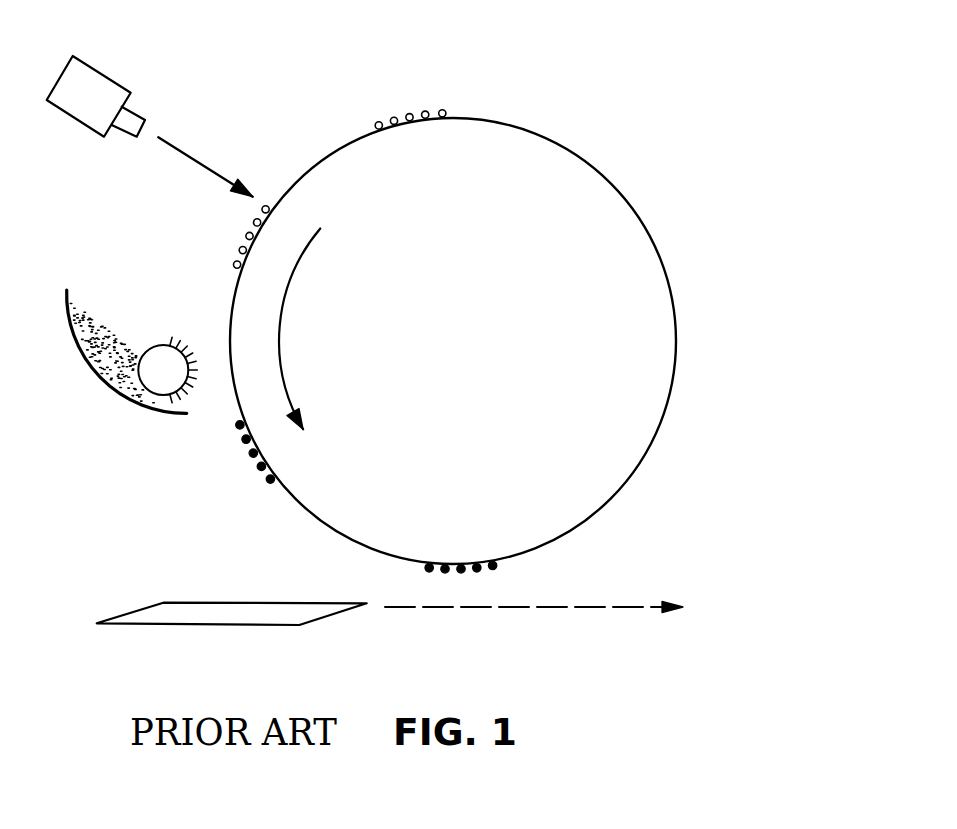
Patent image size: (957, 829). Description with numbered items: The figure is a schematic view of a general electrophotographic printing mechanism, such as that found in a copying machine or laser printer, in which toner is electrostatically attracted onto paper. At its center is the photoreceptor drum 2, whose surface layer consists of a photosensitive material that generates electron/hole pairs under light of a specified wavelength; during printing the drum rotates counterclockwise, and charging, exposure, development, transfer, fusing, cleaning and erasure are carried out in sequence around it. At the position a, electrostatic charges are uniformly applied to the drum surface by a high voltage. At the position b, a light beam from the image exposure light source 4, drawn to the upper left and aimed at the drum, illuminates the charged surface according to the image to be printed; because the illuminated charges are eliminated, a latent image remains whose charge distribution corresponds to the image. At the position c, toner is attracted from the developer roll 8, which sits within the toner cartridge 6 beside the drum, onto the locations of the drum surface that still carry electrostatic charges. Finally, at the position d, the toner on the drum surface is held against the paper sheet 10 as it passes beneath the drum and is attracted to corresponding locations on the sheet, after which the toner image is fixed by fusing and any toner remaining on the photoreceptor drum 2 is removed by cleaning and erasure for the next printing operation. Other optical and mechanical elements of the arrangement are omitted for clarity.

The photoreceptor drum 2 is at (648, 288).
The image exposure light source 4 is at (98, 70).
The toner cartridge 6 is at (102, 322).
The developer roll 8 is at (163, 358).
The paper sheet 10 is at (238, 603).
The charging position a is at (457, 118).
The exposure position b is at (282, 197).
The development position c is at (238, 408).
The transfer position d is at (482, 569).